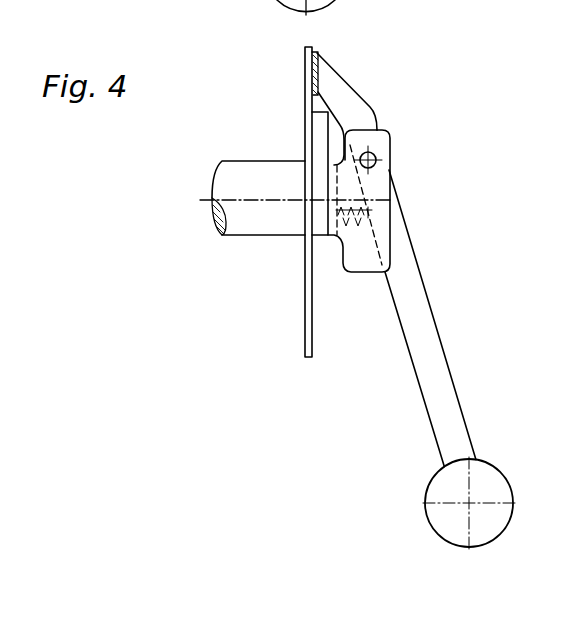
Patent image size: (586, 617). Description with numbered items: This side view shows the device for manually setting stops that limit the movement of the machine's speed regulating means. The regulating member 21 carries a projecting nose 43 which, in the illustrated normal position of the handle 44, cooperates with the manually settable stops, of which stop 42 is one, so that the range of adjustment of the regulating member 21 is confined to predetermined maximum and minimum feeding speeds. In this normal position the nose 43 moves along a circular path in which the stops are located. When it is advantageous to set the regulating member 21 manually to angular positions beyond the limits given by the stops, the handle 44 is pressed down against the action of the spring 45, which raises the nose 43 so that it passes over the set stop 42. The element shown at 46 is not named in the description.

The regulating member 21 is at (247, 173).
The settable stop 42 is at (308, 234).
The projecting nose 43 is at (347, 97).
The handle 44 is at (420, 333).
The spring 45 is at (350, 212).
The pivot bracket with hole 46 is at (374, 155).